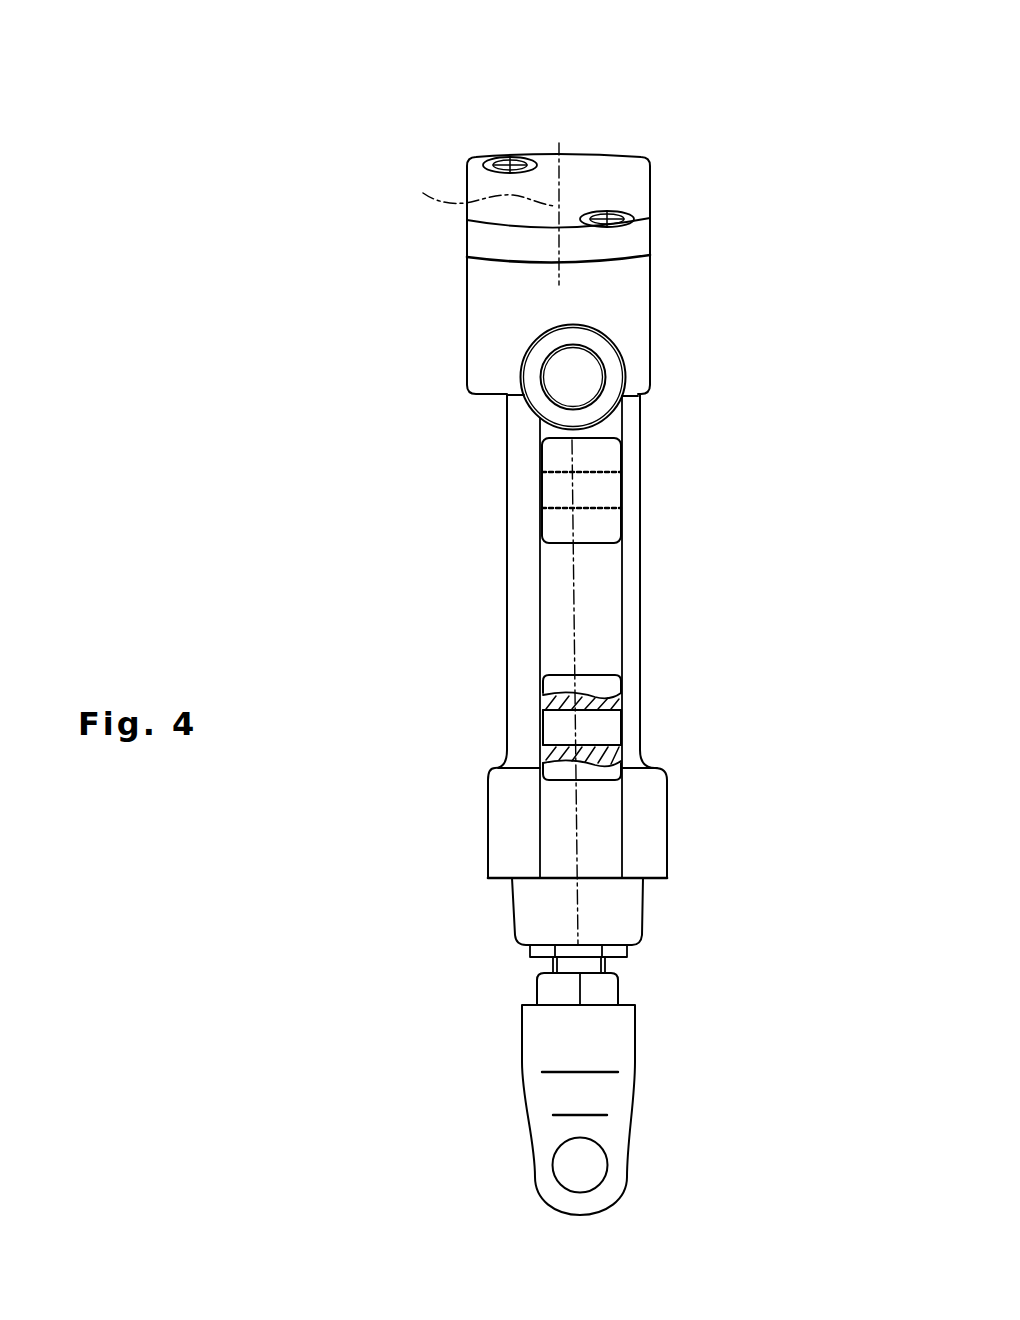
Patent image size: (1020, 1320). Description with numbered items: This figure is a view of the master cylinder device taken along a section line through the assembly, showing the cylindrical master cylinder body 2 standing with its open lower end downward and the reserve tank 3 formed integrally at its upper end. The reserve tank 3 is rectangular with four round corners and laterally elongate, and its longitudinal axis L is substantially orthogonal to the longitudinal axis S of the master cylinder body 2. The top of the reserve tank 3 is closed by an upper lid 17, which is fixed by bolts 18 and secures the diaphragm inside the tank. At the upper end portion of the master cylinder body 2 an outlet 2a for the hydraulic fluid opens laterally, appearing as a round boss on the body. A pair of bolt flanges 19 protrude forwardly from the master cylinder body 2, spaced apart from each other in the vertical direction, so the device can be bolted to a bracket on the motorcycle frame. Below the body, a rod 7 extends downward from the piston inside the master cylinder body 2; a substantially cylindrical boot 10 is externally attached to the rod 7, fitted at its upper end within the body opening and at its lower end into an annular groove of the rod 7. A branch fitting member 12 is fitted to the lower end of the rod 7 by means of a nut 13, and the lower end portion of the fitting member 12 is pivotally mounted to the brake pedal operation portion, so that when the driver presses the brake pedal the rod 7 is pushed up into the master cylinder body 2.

The master cylinder body 2 is at (635, 483).
The outlet 2a is at (612, 375).
The reserve tank 3 is at (633, 297).
The rod 7 is at (606, 963).
The boot 10 is at (630, 913).
The branch fitting member 12 is at (622, 1042).
The nut 13 is at (615, 992).
The upper lid 17 is at (623, 168).
The bolts 18 is at (609, 213).
The bolt flanges 19 is at (543, 493).
The longitudinal axis of the reserve tank L is at (475, 196).
The longitudinal axis of the master cylinder body S is at (583, 580).